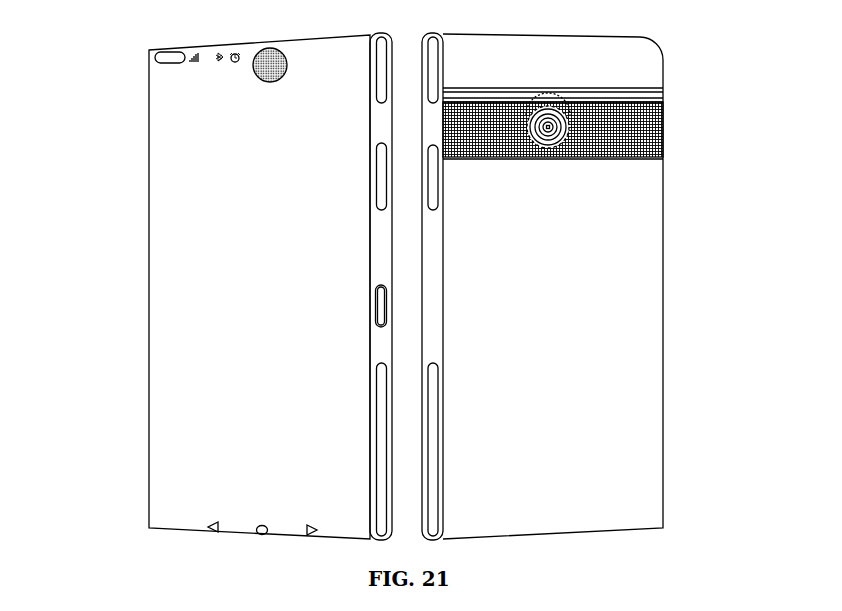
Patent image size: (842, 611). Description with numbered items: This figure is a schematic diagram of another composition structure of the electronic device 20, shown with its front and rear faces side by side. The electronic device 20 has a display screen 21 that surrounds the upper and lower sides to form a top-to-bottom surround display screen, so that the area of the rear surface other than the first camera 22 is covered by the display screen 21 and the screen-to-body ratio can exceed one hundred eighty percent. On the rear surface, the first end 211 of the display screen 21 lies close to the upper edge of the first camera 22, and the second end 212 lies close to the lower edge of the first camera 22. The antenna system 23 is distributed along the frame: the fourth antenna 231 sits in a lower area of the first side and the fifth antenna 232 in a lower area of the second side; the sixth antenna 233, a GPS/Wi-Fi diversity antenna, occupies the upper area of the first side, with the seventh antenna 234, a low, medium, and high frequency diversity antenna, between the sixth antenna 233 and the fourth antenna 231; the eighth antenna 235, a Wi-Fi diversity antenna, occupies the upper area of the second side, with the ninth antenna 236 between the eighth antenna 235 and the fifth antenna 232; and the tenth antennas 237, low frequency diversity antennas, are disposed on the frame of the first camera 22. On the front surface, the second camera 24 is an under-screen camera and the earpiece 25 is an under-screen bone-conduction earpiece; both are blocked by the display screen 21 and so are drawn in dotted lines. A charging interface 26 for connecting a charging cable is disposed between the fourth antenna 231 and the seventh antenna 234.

The electronic device 20 is at (118, 82).
The display screen 21 is at (735, 58).
The first end 211 is at (638, 88).
The second end 212 is at (638, 158).
The first camera 22 is at (563, 133).
The antenna system 23 is at (90, 408).
The fourth antenna 231 is at (378, 450).
The fifth antenna 232 is at (432, 363).
The sixth antenna 233 is at (382, 75).
The seventh antenna 234 is at (381, 170).
The eighth antenna 235 is at (432, 75).
The ninth antenna 236 is at (432, 178).
The tenth antennas 237 is at (530, 140).
The second camera 24 is at (254, 70).
The earpiece 25 is at (240, 514).
The charging interface 26 is at (389, 307).